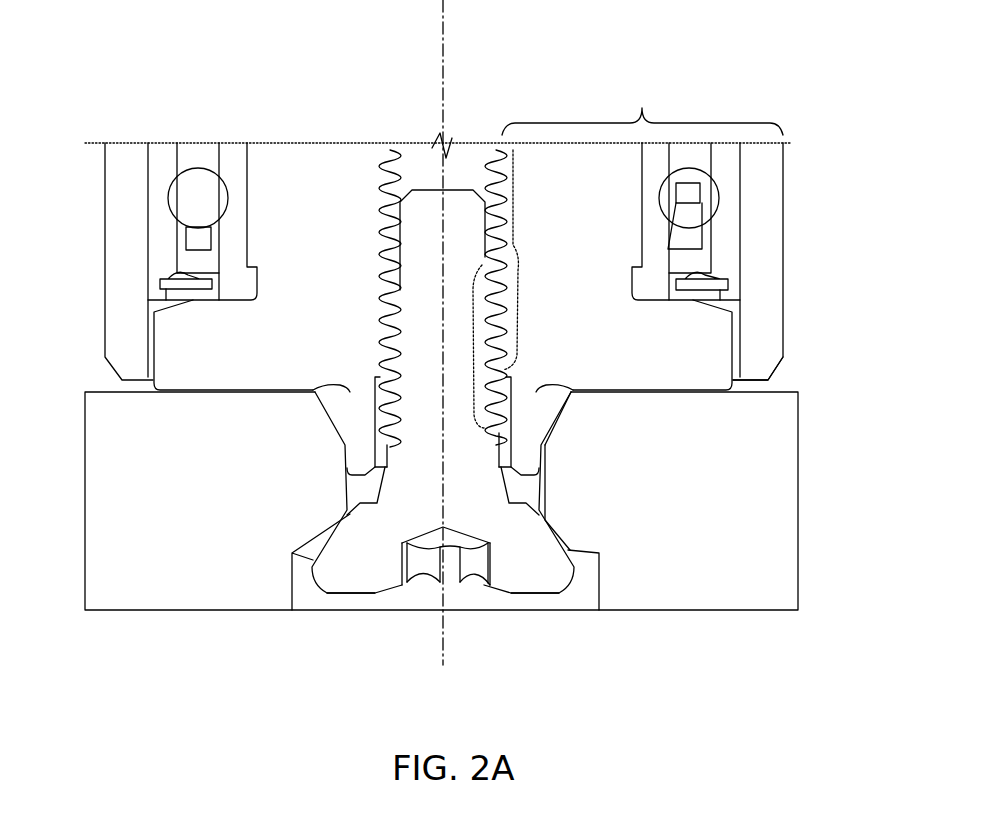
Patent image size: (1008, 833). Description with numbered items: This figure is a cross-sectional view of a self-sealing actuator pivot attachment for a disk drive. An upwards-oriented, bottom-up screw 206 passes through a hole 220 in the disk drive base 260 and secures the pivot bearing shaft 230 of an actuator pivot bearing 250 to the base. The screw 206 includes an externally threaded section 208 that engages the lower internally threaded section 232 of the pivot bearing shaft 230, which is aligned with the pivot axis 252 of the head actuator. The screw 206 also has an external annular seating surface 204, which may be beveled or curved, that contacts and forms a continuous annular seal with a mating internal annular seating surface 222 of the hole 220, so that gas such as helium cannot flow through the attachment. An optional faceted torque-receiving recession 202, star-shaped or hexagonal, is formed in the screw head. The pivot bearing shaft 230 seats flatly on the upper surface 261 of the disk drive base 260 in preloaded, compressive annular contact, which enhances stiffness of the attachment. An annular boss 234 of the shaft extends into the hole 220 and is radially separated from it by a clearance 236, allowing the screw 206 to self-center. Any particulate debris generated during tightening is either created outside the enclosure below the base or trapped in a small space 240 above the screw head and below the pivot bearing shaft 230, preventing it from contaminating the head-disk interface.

The faceted torque-receiving recession 202 is at (473, 570).
The external annular seating surface 204 is at (575, 545).
The screw 206 is at (435, 202).
The externally threaded section 208 is at (467, 345).
The hole 220 is at (577, 592).
The internal annular seating surface 222 is at (322, 538).
The pivot bearing shaft 230 is at (335, 157).
The lower internally threaded section 232 is at (523, 260).
The annular boss 234 is at (520, 413).
The clearance 236 is at (545, 477).
The small space 240 is at (360, 485).
The actuator pivot bearing 250 is at (642, 108).
The pivot axis 252 is at (443, 32).
The disk drive base 260 is at (713, 592).
The upper surface 261 is at (780, 390).